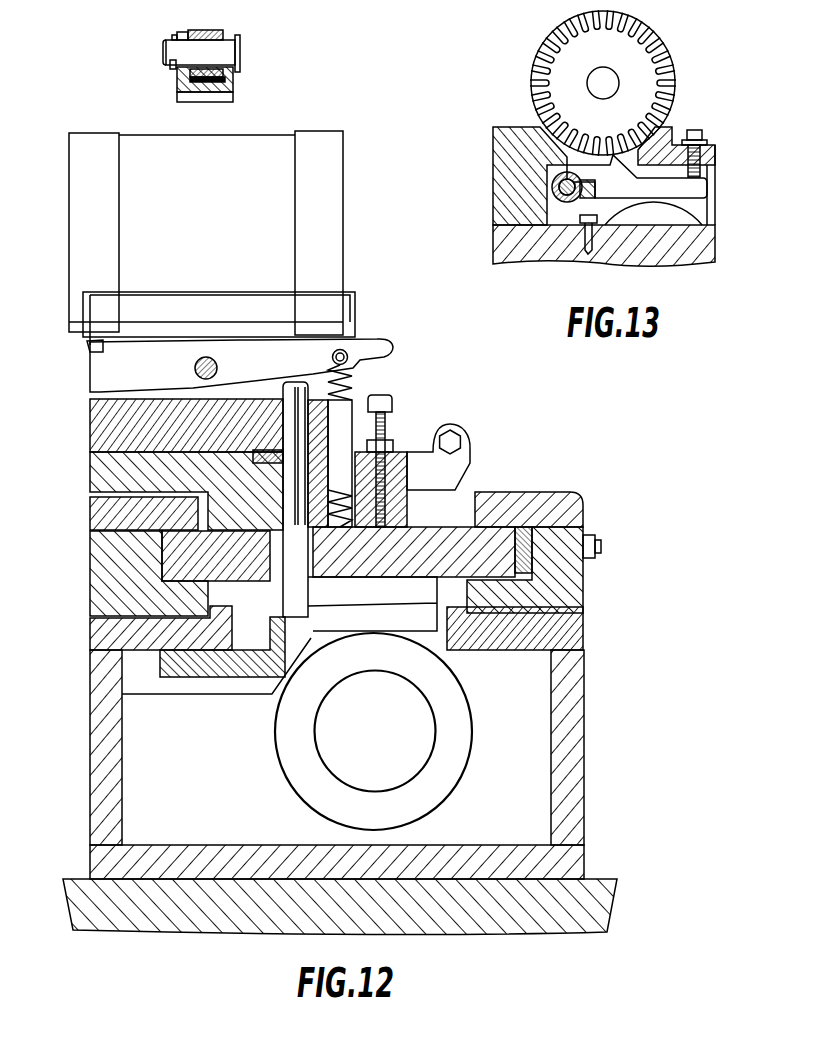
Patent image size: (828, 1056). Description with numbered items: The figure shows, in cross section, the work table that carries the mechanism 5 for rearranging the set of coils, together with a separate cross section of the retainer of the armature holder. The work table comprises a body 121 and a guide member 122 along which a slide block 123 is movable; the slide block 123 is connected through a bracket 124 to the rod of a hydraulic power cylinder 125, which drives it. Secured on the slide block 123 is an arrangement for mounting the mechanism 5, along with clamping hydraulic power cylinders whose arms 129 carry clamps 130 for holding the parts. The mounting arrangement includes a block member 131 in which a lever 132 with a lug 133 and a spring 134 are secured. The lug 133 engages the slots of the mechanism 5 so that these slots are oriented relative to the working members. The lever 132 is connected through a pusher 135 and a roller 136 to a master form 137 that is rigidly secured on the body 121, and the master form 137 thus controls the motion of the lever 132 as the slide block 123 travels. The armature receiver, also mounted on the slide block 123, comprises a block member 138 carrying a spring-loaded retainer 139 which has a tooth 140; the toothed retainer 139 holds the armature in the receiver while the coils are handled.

In FIG. 12, the mechanism 5 is at (342, 228).
In FIG. 12, the body 121 is at (577, 714).
In FIG. 12, the guide member 122 is at (576, 590).
In FIG. 12, the slide block 123 is at (427, 542).
In FIG. 12, the bracket 124 is at (450, 634).
In FIG. 12, the hydraulic power cylinder 125 is at (455, 749).
In FIG. 12, the arm 129 is at (228, 32).
In FIG. 12, the clamp 130 is at (233, 82).
In FIG. 12, the block member 131 is at (92, 428).
In FIG. 12, the lever 132 is at (378, 342).
In FIG. 12, the lug 133 is at (88, 346).
In FIG. 12, the spring 134 is at (348, 388).
In FIG. 12, the pusher 135 is at (283, 598).
In FIG. 12, the roller 136 is at (275, 609).
In FIG. 12, the master form 137 is at (241, 667).
In FIG. 13, the block member 138 is at (507, 175).
In FIG. 13, the spring-loaded retainer 139 is at (713, 150).
In FIG. 13, the tooth 140 is at (675, 150).